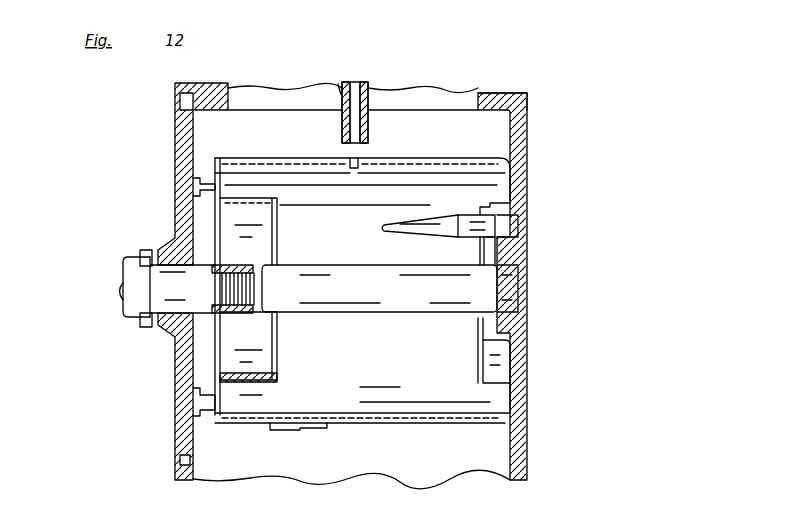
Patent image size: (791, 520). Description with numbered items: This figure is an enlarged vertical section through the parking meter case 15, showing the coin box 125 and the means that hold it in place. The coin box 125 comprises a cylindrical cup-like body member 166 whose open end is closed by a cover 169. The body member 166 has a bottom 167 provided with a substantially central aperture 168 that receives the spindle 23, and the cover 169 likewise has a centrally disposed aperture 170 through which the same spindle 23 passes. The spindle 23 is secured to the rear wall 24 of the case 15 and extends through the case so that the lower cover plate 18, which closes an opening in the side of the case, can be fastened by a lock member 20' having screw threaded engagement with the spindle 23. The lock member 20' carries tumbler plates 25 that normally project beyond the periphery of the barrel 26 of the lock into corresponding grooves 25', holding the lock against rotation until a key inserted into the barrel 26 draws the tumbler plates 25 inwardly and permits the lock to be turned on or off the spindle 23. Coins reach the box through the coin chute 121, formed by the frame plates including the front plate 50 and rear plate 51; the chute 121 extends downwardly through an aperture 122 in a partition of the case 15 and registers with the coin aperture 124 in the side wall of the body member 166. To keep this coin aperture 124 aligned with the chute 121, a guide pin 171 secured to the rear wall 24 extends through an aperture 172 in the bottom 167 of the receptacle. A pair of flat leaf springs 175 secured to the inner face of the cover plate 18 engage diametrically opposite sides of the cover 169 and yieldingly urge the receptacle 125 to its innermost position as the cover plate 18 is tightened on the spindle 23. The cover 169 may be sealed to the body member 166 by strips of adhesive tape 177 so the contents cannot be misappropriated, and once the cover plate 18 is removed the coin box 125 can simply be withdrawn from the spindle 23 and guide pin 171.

The case 15 is at (518, 104).
The cover plate 18 is at (178, 410).
The lock member 20' is at (111, 316).
The spindle 23 is at (390, 288).
The rear wall 24 is at (525, 352).
The tumbler plates 25 is at (152, 242).
The grooves 25' is at (151, 336).
The barrel 26 is at (138, 282).
The front plate 50 is at (340, 88).
The rear plate 51 is at (368, 126).
The coin chute 121 is at (368, 80).
The aperture 122 is at (445, 100).
The coin aperture 124 is at (356, 160).
The coin box 125 is at (510, 202).
The body member 166 is at (440, 424).
The bottom 167 is at (483, 362).
The aperture 168 is at (480, 318).
The cover 169 is at (278, 362).
The aperture 170 is at (276, 266).
The guide pin 171 is at (426, 232).
The aperture 172 is at (480, 208).
The leaf springs 175 is at (192, 182).
The adhesive tape 177 is at (300, 430).